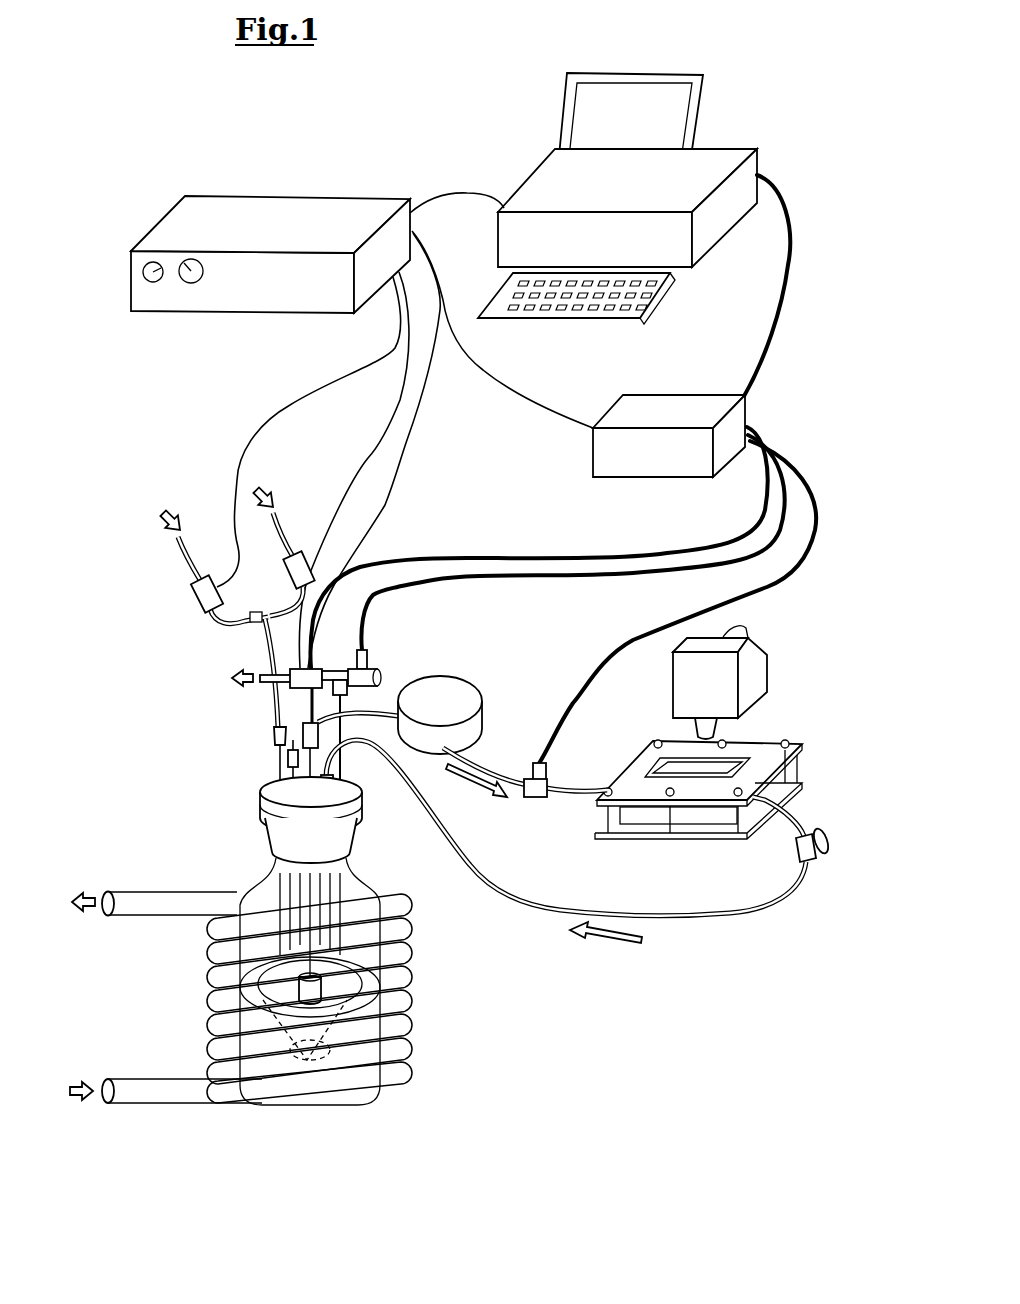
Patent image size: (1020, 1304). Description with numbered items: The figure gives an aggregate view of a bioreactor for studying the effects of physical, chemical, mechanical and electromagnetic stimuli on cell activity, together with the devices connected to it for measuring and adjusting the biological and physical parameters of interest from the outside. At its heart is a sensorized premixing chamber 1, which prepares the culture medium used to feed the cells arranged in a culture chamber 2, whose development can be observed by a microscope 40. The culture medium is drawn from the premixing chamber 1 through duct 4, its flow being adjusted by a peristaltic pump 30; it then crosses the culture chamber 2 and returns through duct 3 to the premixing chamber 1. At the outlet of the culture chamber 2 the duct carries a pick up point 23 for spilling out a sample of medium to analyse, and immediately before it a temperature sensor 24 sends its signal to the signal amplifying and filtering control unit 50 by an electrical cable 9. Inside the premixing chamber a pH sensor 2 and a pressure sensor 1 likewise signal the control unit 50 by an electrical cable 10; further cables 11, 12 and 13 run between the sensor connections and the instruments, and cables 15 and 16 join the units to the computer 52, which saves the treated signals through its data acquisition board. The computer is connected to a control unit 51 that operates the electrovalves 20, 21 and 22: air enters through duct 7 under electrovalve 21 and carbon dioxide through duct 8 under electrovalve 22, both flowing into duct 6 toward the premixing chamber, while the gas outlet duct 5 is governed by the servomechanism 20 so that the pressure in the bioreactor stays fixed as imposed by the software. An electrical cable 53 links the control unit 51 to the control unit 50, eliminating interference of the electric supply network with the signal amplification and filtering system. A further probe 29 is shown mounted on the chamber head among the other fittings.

The sensorized premixing chamber 1 is at (365, 673).
The culture chamber 2 is at (290, 740).
The duct 3 is at (523, 902).
The duct 4 is at (498, 770).
The gas outlet duct 5 is at (343, 767).
The duct 6 is at (273, 703).
The duct 7 is at (183, 558).
The duct 8 is at (290, 522).
The electrical cable 9 is at (783, 580).
The electrical cable 10 is at (497, 580).
The control cable 11 is at (485, 553).
The sensor cable 12 is at (415, 437).
The sensor cable 13 is at (368, 458).
The data cable 15 is at (789, 300).
The data cable 16 is at (463, 197).
The electrovalve 20 is at (308, 680).
The electrovalve 21 is at (210, 595).
The electrovalve 22 is at (302, 568).
The pick up point 23 is at (810, 835).
The temperature sensor 24 is at (533, 798).
The sensor 29 is at (338, 668).
The peristaltic pump 30 is at (458, 698).
The microscope 40 is at (775, 665).
The signal amplifying and filtering control unit 50 is at (642, 417).
The control unit 51 is at (267, 223).
The computer 52 is at (718, 168).
The electrical cable 53 is at (530, 402).